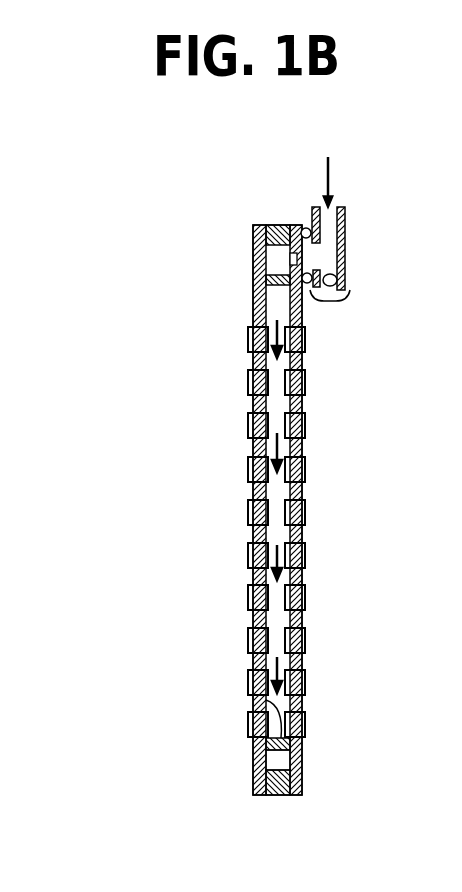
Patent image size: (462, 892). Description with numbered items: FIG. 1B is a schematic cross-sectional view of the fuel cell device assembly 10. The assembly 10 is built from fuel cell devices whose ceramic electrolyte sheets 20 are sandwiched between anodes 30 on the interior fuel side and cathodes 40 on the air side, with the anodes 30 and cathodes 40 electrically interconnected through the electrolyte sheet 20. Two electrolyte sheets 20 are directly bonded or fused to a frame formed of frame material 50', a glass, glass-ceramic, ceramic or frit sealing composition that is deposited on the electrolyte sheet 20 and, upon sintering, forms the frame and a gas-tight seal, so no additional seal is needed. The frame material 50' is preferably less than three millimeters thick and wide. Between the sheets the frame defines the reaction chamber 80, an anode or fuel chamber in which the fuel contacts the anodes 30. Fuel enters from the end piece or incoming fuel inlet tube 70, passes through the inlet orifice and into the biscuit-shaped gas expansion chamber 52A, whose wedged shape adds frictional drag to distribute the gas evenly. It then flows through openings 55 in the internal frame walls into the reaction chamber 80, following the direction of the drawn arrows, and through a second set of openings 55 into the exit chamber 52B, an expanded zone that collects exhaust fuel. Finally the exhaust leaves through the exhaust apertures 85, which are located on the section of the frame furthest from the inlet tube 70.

The fuel cell device assembly 10 is at (218, 216).
The ceramic electrolyte sheet 20 is at (290, 294).
The anode 30 is at (285, 513).
The cathode 40 is at (307, 388).
The frame material 50' is at (310, 508).
The gas expansion chamber 52A is at (276, 260).
The exit chamber 52B is at (303, 756).
The openings 55 is at (305, 257).
The fuel inlet tube 70 is at (332, 301).
The reaction chamber 80 is at (270, 380).
The exhaust apertures 85 is at (270, 762).